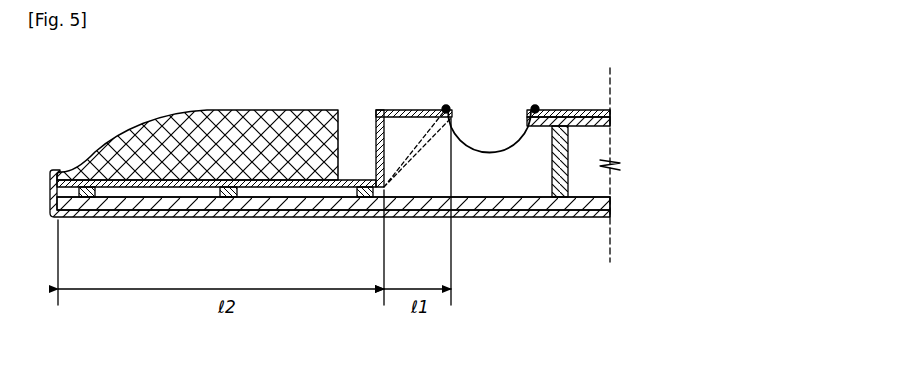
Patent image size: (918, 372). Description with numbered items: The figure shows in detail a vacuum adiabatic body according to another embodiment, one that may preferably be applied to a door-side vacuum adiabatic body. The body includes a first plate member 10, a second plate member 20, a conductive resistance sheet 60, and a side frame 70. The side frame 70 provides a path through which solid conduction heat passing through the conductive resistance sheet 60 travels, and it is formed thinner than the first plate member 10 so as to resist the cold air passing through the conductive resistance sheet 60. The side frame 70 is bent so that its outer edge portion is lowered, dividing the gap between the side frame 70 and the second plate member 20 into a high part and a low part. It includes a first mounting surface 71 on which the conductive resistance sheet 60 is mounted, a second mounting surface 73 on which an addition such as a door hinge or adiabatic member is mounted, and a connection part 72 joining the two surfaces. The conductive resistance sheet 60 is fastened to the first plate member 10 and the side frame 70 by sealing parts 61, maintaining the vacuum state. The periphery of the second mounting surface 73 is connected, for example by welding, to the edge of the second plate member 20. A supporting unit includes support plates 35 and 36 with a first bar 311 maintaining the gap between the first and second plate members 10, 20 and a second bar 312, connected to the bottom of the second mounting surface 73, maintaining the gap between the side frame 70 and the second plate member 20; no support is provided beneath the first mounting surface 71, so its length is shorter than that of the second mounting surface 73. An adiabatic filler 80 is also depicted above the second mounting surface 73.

The first plate member 10 is at (573, 109).
The second plate member 20 is at (267, 205).
The support plate 35 is at (133, 211).
The support plate 36 is at (606, 124).
The conductive resistance sheet 60 is at (489, 150).
The sealing parts 61 is at (446, 105).
The side frame 70 is at (408, 124).
The first mounting surface 71 is at (403, 109).
The connection part 72 is at (375, 148).
The second mounting surface 73 is at (190, 195).
The filler member 80 is at (247, 108).
The first bar 311 is at (552, 168).
The second bar 312 is at (367, 197).